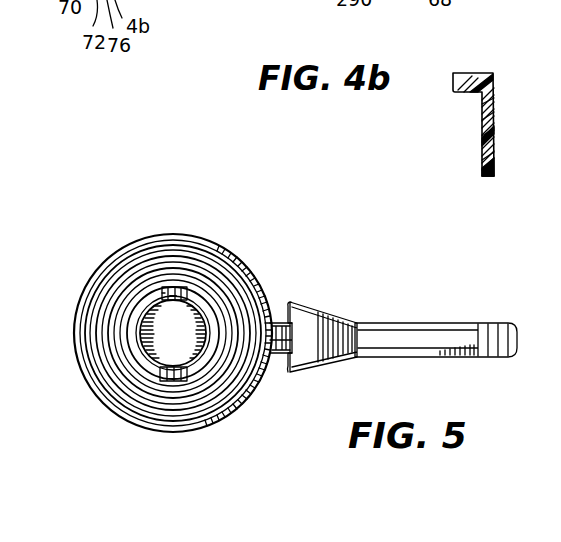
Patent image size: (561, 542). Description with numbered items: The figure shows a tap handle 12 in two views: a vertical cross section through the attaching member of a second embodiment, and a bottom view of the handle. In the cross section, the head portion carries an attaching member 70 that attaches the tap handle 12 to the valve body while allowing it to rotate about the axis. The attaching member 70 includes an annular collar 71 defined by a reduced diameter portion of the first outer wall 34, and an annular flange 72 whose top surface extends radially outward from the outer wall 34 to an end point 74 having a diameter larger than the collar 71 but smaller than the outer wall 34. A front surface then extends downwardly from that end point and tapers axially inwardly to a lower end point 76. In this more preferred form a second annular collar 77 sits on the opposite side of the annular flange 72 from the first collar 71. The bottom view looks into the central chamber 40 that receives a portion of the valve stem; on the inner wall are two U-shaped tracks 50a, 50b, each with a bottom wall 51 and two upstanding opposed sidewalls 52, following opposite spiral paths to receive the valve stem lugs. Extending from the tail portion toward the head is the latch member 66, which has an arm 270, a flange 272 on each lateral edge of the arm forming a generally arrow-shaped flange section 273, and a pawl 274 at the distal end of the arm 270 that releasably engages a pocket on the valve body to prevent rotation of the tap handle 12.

In FIG. 4b, the attaching member 70 is at (492, 141).
In FIG. 4b, the first outer wall 34 is at (470, 88).
In FIG. 4b, the annular collar 71 is at (481, 106).
In FIG. 4b, the end point 74 is at (482, 126).
In FIG. 4b, the annular flange 72 is at (484, 138).
In FIG. 4b, the second annular collar 77 is at (485, 166).
In FIG. 4b, the end point 76 is at (493, 174).
In FIG. 5, the tap handle 12 is at (120, 233).
In FIG. 5, the central chamber 40 is at (165, 352).
In FIG. 5, the U-shaped track 50a is at (183, 297).
In FIG. 5, the U-shaped track 50b is at (176, 382).
In FIG. 5, the bottom wall 51 is at (167, 296).
In FIG. 5, the opposed sidewalls 52 is at (163, 291).
In FIG. 5, the pawl 274 is at (285, 354).
In FIG. 5, the arrow-shaped flange section 273 is at (323, 328).
In FIG. 5, the flange 272 is at (314, 366).
In FIG. 5, the latch member 66 is at (436, 337).
In FIG. 5, the arm 270 is at (418, 340).